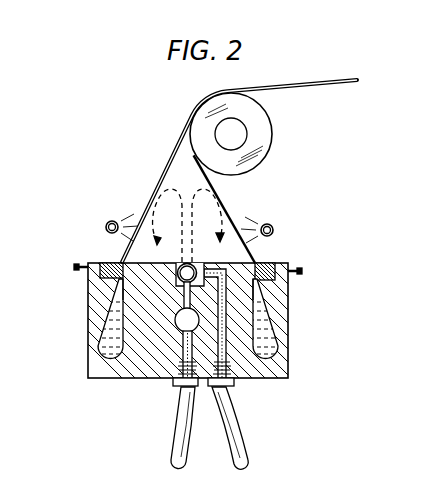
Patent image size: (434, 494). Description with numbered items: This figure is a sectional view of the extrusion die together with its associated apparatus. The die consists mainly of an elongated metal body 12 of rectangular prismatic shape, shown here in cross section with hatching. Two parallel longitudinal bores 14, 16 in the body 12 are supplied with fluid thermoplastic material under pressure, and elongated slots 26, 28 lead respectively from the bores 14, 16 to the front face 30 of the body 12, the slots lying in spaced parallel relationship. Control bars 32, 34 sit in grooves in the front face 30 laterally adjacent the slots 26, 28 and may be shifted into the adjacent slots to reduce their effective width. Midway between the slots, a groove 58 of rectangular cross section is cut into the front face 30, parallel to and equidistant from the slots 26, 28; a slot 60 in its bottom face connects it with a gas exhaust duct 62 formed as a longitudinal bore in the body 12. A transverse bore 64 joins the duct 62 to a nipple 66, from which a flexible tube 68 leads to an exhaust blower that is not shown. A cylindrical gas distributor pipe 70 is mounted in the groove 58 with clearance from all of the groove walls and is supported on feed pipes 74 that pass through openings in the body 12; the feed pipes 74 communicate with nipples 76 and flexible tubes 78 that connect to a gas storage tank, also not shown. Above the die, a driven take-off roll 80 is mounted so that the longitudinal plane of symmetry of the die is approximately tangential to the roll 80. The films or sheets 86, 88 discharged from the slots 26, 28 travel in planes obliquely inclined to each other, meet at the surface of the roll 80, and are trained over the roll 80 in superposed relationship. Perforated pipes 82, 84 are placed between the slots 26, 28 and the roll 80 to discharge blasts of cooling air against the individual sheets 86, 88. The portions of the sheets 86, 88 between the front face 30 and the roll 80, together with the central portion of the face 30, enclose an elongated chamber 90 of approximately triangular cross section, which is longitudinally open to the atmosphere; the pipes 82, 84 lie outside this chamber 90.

The body 12 is at (103, 378).
The longitudinal bore 14 is at (100, 347).
The longitudinal bore 16 is at (278, 343).
The elongated slot 26 is at (122, 288).
The elongated slot 28 is at (255, 288).
The front face 30 is at (292, 262).
The control bar 32 is at (110, 262).
The control bar 34 is at (270, 262).
The groove 58 is at (180, 284).
The slot 60 is at (183, 300).
The gas exhaust duct 62 is at (182, 324).
The transverse bore 64 is at (174, 381).
The nipple 66 is at (181, 389).
The flexible tube 68 is at (174, 447).
The gas distributor pipe 70 is at (190, 262).
The feed pipe 74 is at (232, 365).
The nipple 76 is at (232, 390).
The flexible tube 78 is at (243, 447).
The take-off roll 80 is at (268, 128).
The perforated pipe 82 is at (108, 221).
The perforated pipe 84 is at (270, 224).
The film or sheet 86 is at (183, 127).
The film or sheet 88 is at (221, 184).
The chamber 90 is at (172, 158).